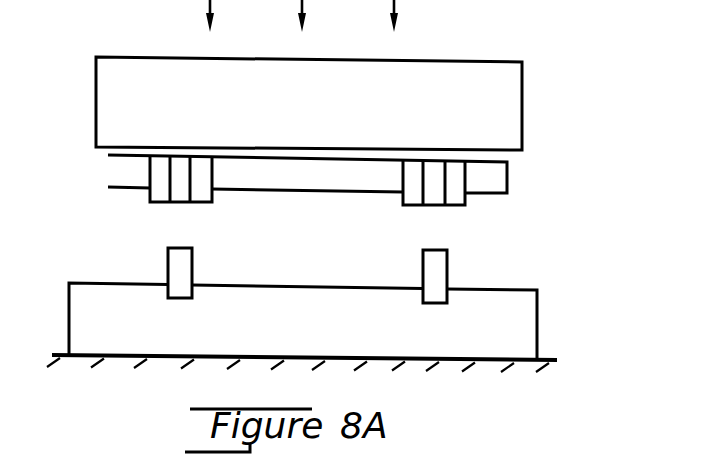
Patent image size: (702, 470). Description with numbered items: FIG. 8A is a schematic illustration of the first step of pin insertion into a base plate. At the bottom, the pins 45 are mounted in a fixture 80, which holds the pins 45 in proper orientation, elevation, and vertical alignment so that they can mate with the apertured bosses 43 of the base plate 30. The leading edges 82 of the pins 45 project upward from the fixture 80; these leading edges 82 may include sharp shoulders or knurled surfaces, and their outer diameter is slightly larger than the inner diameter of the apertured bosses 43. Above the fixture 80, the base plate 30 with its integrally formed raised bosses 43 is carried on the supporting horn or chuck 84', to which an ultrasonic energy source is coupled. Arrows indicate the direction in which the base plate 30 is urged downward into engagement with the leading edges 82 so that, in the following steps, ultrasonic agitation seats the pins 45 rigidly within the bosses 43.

The supporting horn or chuck 84' is at (347, 103).
The base plate 30 is at (507, 178).
The raised bosses 43 is at (403, 201).
The fixture 80 is at (530, 330).
The leading edges 82 is at (192, 250).
The pins 45 is at (168, 266).